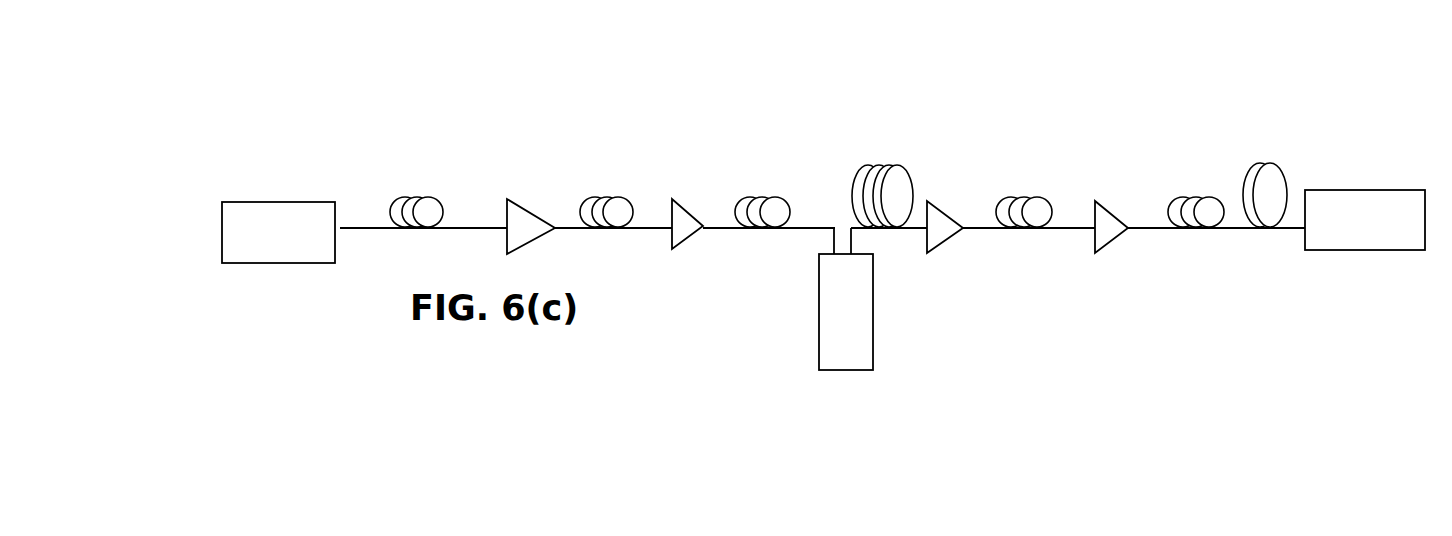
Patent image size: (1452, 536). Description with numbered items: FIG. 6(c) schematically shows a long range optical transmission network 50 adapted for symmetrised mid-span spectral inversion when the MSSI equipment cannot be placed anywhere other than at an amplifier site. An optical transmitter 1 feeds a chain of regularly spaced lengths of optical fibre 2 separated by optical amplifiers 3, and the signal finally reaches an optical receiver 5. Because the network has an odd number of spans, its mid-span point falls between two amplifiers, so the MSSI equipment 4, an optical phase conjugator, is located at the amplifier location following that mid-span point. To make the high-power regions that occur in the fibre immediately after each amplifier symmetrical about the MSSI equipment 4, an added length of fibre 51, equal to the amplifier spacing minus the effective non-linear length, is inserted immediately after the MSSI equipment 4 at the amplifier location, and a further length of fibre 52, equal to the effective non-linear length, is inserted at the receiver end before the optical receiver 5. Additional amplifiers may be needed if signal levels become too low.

The optical transmitter 1 is at (285, 212).
The lengths of optical fibre 2 is at (420, 190).
The optical amplifiers 3 is at (514, 202).
The MSSI equipment 4 is at (822, 305).
The optical receiver 5 is at (1350, 197).
The network 50 is at (1005, 267).
The length of fibre 51 is at (868, 166).
The length of fibre 52 is at (1268, 230).